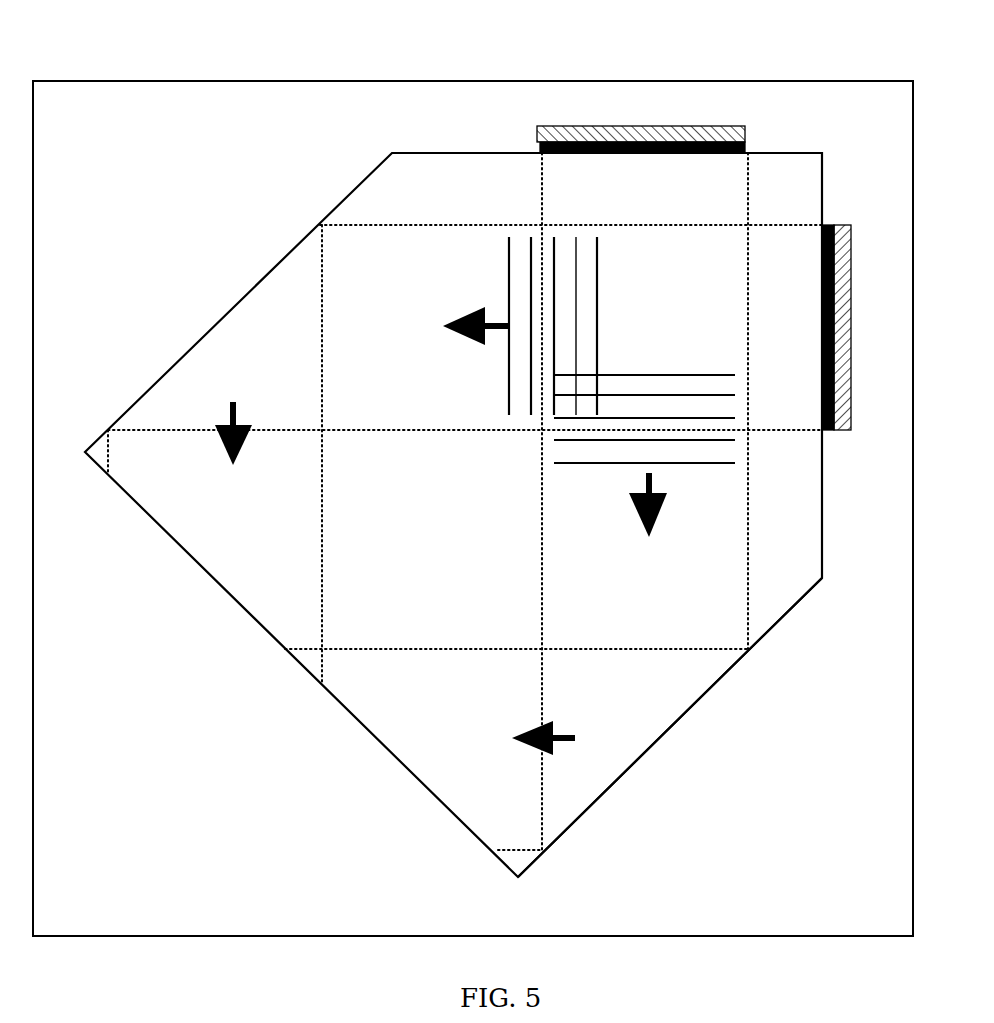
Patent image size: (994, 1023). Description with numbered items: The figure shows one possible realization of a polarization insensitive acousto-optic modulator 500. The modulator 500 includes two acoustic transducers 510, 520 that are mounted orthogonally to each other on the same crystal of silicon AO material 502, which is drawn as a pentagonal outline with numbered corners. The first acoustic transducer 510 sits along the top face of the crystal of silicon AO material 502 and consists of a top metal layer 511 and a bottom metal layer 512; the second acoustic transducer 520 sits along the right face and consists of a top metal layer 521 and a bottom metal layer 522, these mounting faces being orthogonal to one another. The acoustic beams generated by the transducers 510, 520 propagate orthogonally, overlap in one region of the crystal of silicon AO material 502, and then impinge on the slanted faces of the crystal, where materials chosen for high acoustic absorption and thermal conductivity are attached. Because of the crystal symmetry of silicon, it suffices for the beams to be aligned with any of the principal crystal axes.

The modulator 500 is at (750, 780).
The crystal of silicon AO material 502 is at (685, 673).
The acoustic transducer 510 is at (644, 134).
The top metal layer 511 is at (745, 133).
The bottom metal layer 512 is at (733, 156).
The acoustic transducer 520 is at (866, 354).
The top metal layer 521 is at (843, 431).
The bottom metal layer 522 is at (823, 440).